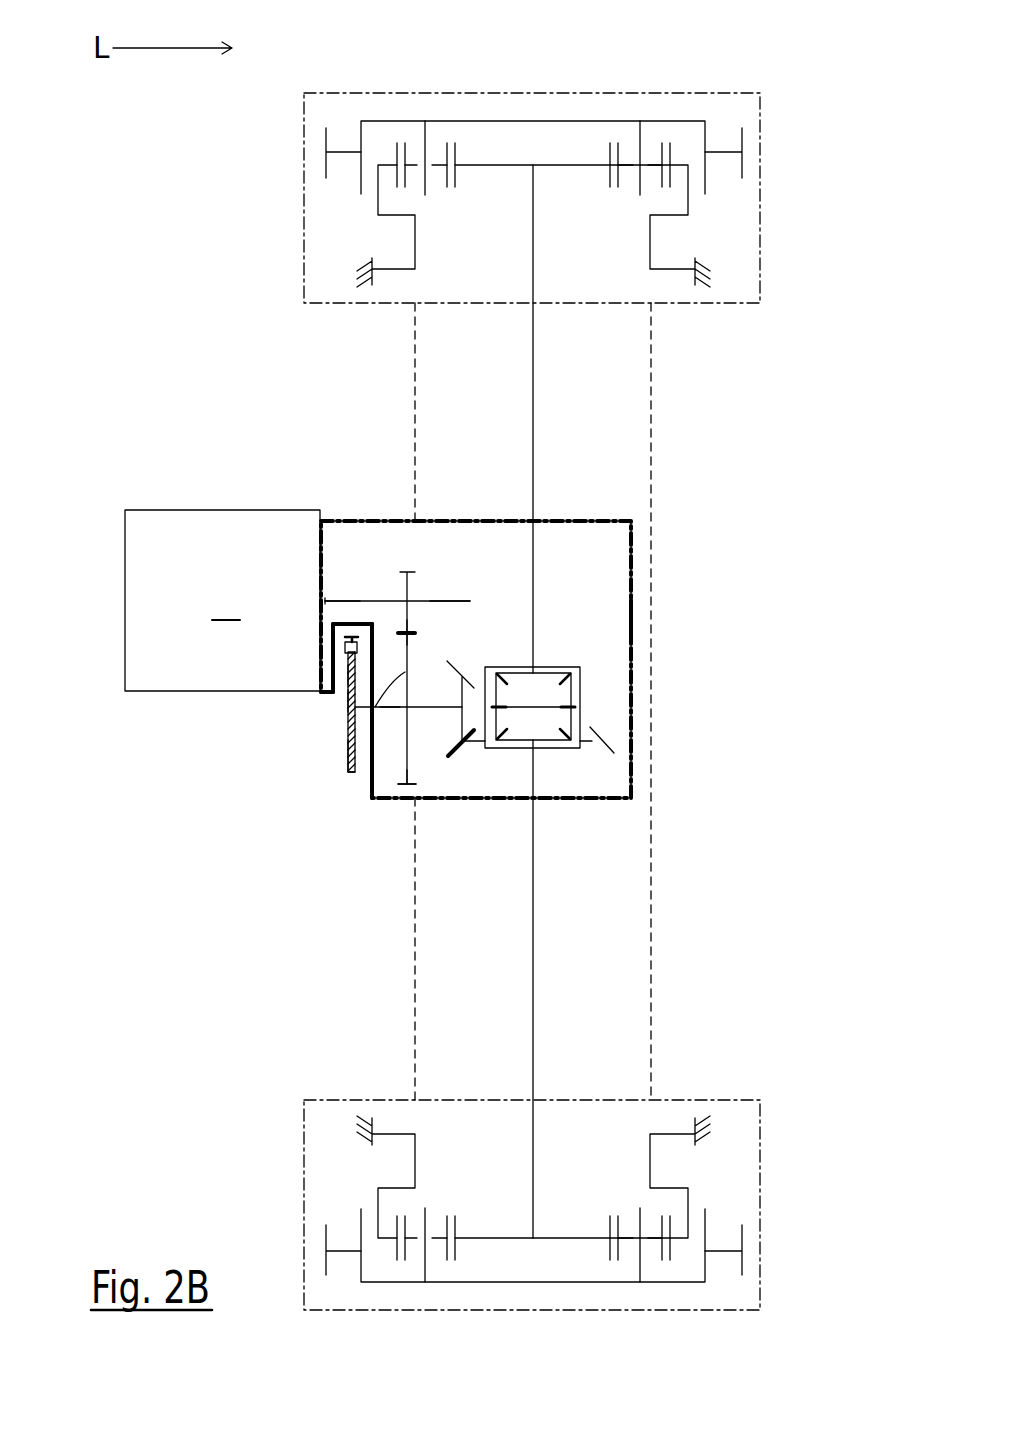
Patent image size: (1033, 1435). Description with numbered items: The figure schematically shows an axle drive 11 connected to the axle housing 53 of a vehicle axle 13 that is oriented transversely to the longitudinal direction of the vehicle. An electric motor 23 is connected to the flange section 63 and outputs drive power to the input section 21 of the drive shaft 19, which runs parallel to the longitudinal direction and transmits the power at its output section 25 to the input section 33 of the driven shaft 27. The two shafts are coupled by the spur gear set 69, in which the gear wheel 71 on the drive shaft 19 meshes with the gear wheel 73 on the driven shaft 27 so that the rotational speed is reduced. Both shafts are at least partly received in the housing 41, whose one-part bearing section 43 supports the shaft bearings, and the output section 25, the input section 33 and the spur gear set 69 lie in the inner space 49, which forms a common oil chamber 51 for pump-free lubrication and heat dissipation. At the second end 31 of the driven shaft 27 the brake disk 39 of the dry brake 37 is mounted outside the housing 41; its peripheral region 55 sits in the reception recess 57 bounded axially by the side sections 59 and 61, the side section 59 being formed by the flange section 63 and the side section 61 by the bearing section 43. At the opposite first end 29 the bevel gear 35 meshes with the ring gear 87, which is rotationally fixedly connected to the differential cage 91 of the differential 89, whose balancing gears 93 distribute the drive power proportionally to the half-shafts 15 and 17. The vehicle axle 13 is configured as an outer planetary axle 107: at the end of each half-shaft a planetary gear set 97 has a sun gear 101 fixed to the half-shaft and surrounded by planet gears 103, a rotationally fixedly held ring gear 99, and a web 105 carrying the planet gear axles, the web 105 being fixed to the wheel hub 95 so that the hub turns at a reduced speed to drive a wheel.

The axle drive 11 is at (324, 496).
The vehicle axle 13 is at (533, 380).
The half-shaft 15 is at (533, 550).
The half-shaft 17 is at (533, 838).
The drive shaft 19 is at (390, 600).
The input section 21 is at (342, 600).
The electric motor 23 is at (222, 600).
The output section 25 is at (443, 600).
The driven shaft 27 is at (383, 708).
The first end 29 is at (421, 708).
The second end 31 is at (350, 772).
The input section 33 is at (392, 708).
The bevel gear 35 is at (472, 688).
The brake 37 is at (265, 771).
The brake disk 39 is at (350, 698).
The housing 41 is at (631, 612).
The bearing section 43 is at (428, 520).
The inner space 49 is at (437, 798).
The common oil chamber 51 is at (382, 861).
The axle housing 53 is at (651, 912).
The peripheral region 55 is at (342, 673).
The reception recess 57 is at (336, 721).
The side section 59 is at (333, 652).
The side section 61 is at (374, 690).
The flange section 63 is at (335, 608).
The spur gear set 69 is at (430, 621).
The gear wheel 71 is at (398, 572).
The gear wheel 73 is at (360, 708).
The ring gear 87 is at (468, 750).
The differential 89 is at (558, 611).
The differential cage 91 is at (580, 685).
The balancing gears 93 is at (497, 676).
The wheel hub 95 is at (742, 152).
The planetary gear set 97 is at (494, 217).
The ring gear 99 is at (672, 143).
The sun gear 101 is at (464, 148).
The planet gears 103 is at (445, 148).
The web 105 is at (643, 140).
The outer planetary axle 107 is at (761, 349).